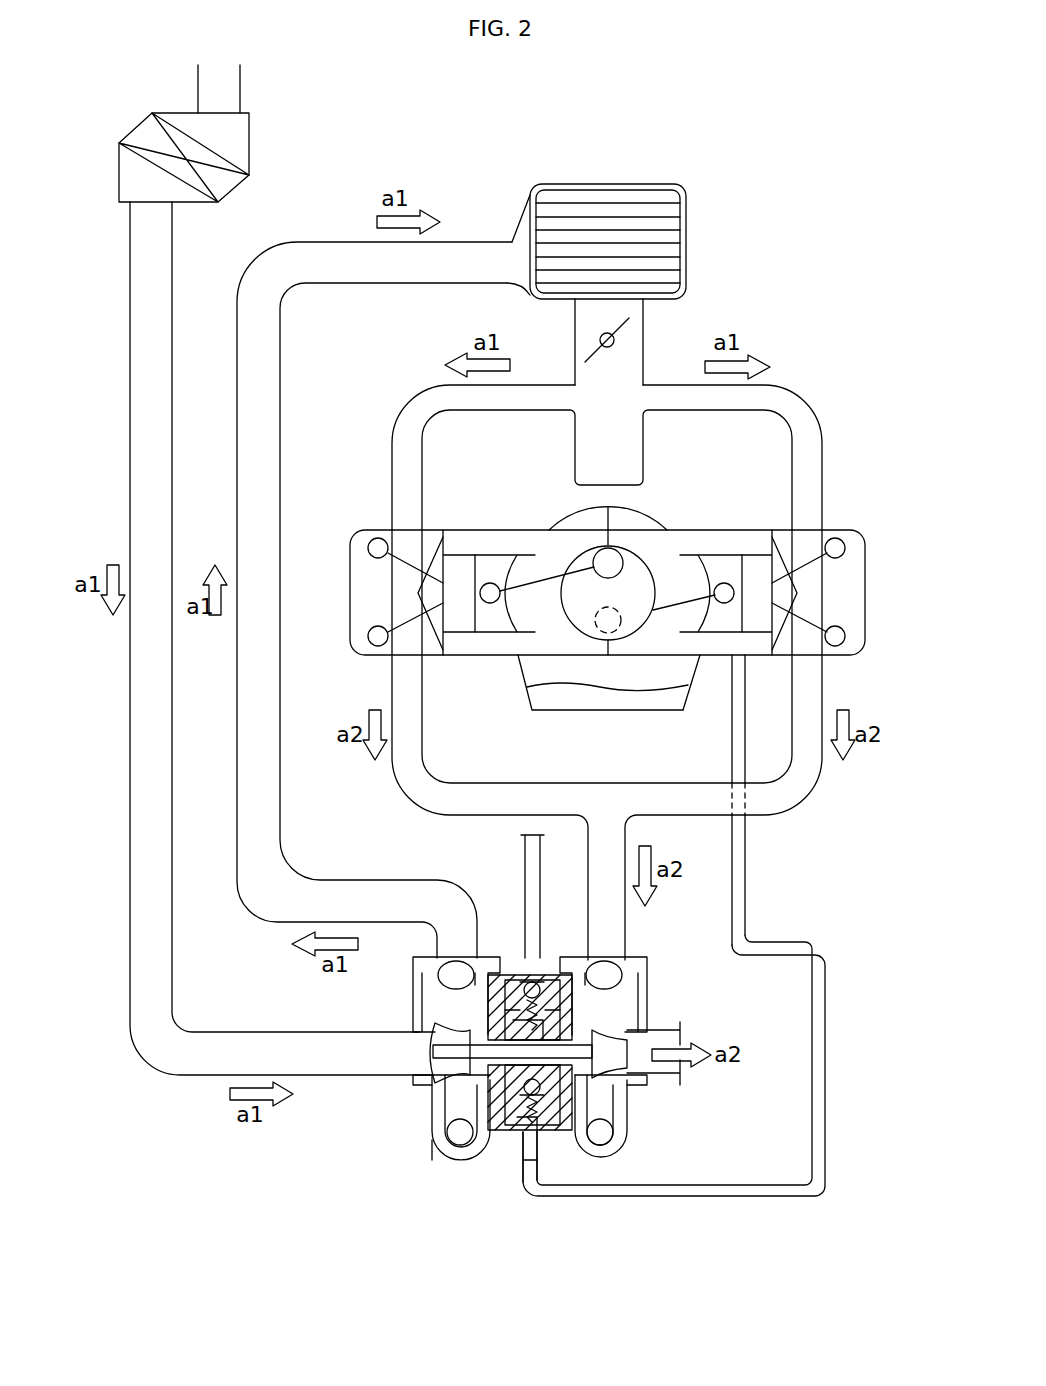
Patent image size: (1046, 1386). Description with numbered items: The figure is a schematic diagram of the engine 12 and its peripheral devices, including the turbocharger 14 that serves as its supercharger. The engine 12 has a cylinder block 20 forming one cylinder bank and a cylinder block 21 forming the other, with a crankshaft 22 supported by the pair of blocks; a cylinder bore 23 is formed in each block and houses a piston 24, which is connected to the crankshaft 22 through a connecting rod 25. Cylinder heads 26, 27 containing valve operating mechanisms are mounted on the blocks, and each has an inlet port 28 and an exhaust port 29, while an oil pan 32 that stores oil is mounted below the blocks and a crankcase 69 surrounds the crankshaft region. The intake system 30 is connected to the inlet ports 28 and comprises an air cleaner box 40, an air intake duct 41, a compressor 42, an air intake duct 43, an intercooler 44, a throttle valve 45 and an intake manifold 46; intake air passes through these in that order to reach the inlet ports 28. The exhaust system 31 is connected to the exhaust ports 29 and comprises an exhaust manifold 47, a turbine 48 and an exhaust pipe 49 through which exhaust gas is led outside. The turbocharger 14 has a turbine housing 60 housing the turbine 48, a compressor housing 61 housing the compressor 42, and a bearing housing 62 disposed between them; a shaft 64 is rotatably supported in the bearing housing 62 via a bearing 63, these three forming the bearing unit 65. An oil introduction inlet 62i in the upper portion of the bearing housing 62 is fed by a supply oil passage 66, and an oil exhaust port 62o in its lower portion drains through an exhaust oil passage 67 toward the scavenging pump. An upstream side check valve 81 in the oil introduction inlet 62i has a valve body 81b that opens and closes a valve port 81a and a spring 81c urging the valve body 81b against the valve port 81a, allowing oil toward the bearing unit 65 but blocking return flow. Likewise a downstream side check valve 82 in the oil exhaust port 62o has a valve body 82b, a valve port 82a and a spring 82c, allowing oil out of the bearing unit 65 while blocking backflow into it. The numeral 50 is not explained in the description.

The engine 12 is at (872, 526).
The turbocharger 14 is at (395, 1212).
The cylinder block 20 is at (507, 658).
The cylinder block 21 is at (708, 660).
The crankshaft 22 is at (637, 550).
The cylinder bore 23 is at (455, 575).
The piston 24 is at (735, 555).
The connecting rod 25 is at (545, 588).
The cylinder head 26 is at (352, 655).
The cylinder head 27 is at (868, 652).
The inlet port 28 is at (407, 540).
The exhaust port 29 is at (395, 645).
The intake system 30 is at (735, 136).
The exhaust system 31 is at (793, 862).
The oil pan 32 is at (584, 712).
The air cleaner box 40 is at (178, 113).
The air intake duct 41 is at (130, 790).
The compressor 42 is at (440, 1050).
The air intake duct 43 is at (336, 242).
The intercooler 44 is at (606, 184).
The throttle valve 45 is at (583, 356).
The intake manifold 46 is at (822, 401).
The exhaust manifold 47 is at (805, 809).
The turbine 48 is at (605, 1062).
The exhaust pipe 49 is at (668, 1070).
The turbocharger unit 50 is at (290, 1212).
The turbine housing 60 is at (640, 1011).
The compressor housing 61 is at (442, 1139).
The bearing housing 62 is at (592, 997).
The oil introduction inlet 62i is at (440, 988).
The oil exhaust port 62o is at (497, 1148).
The bearing 63 is at (620, 1110).
The shaft 64 is at (465, 1068).
The bearing unit 65 is at (447, 1095).
The supply oil passage 66 is at (525, 858).
The exhaust oil passage 67 is at (828, 1090).
The crankcase 69 is at (558, 528).
The upstream side check valve 81 is at (575, 985).
The valve port 81a is at (522, 978).
The valve body 81b is at (545, 978).
The spring 81c is at (440, 1018).
The downstream side check valve 82 is at (582, 1140).
The valve port 82a is at (440, 1125).
The valve body 82b is at (540, 1098).
The spring 82c is at (523, 1145).